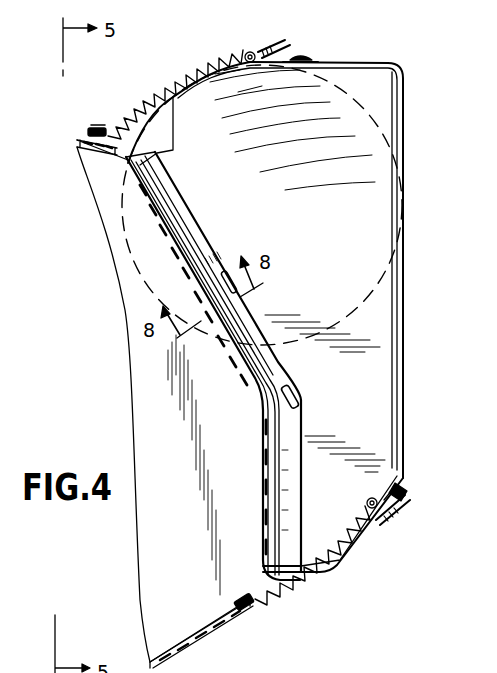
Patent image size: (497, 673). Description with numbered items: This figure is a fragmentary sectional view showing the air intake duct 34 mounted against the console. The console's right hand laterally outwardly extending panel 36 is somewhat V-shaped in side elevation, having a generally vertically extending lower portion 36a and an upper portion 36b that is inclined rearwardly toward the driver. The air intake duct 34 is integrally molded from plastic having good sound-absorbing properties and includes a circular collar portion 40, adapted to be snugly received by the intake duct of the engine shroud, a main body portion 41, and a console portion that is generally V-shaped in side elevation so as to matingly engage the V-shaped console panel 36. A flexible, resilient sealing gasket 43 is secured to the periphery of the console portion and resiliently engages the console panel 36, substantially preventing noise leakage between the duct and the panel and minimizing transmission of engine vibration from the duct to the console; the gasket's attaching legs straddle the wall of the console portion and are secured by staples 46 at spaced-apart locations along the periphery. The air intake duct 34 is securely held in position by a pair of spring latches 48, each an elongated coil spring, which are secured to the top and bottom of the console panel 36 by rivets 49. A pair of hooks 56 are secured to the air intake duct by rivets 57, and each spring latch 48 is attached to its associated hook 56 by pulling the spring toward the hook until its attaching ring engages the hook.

The air intake duct 34 is at (353, 340).
The right hand laterally outwardly extending panel 36 is at (183, 218).
The lower portion 36a is at (262, 507).
The upper portion 36b is at (250, 357).
The circular collar portion 40 is at (347, 100).
The main body portion 41 is at (373, 437).
The sealing gasket 43 is at (197, 230).
The staples 46 is at (297, 400).
The spring latches 48 is at (164, 92).
The rivets 49 is at (98, 130).
The hooks 56 is at (272, 47).
The rivets 57 is at (303, 53).